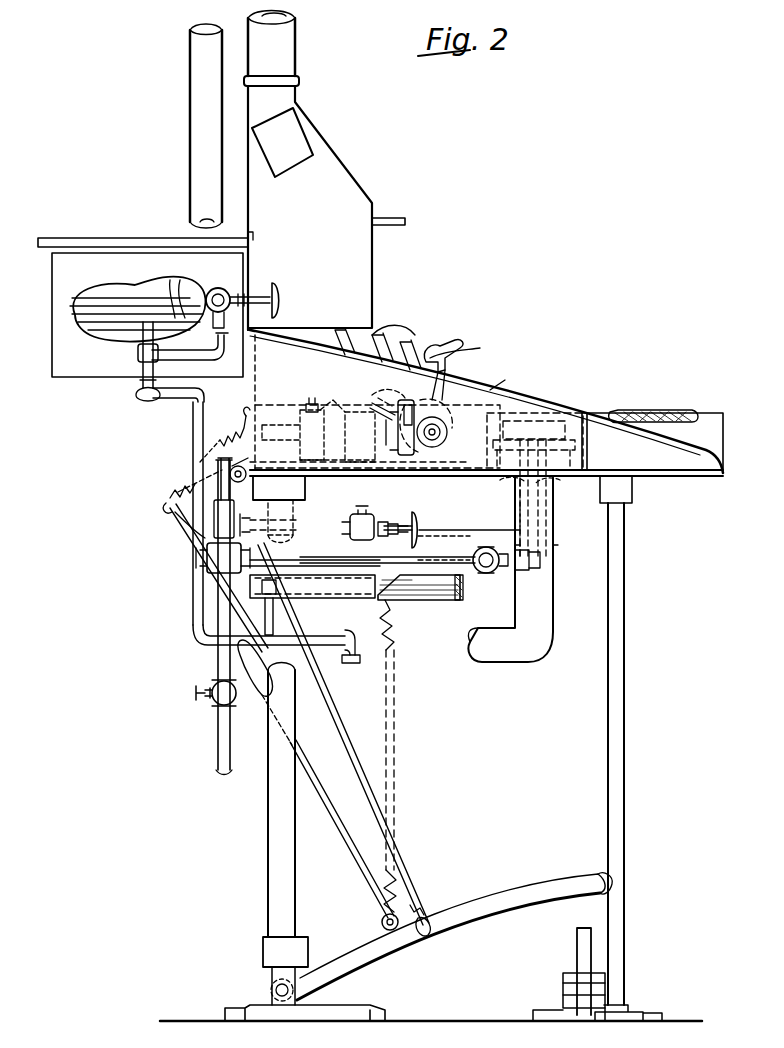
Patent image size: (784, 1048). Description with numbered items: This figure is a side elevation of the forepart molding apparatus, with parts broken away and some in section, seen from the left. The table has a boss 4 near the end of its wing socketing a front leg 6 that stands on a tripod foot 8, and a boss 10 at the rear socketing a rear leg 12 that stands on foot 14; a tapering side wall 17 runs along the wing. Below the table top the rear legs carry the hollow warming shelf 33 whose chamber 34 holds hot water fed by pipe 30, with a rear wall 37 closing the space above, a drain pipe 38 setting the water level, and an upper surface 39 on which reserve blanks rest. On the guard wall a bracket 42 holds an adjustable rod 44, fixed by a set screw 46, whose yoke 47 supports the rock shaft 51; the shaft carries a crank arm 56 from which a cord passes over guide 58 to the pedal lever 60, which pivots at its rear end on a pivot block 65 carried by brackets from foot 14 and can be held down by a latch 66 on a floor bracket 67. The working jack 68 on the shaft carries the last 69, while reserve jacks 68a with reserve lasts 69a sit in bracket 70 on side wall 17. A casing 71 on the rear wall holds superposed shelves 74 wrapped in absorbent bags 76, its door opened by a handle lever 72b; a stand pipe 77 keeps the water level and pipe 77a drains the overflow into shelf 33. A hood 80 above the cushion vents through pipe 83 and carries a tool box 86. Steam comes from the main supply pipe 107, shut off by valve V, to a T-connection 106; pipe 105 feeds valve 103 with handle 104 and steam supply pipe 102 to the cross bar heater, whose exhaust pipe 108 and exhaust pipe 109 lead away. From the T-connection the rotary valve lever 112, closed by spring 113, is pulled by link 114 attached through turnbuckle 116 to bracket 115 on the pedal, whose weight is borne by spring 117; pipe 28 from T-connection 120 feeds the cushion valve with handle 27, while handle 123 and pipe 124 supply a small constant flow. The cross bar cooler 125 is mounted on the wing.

The boss 4 is at (633, 490).
The front leg 6 is at (626, 618).
The foot 8 is at (644, 1011).
The boss 10 is at (270, 470).
The rear leg 12 is at (265, 884).
The foot 14 is at (330, 1010).
The side wall 17 is at (455, 390).
The operating handle 27 is at (418, 526).
The pipe 28 is at (250, 528).
The pipe 30 is at (463, 518).
The warming shelf 33 is at (416, 608).
The chamber 34 is at (452, 608).
The rear wall 37 is at (233, 472).
The drain pipe 38 is at (274, 628).
The upper surface 39 is at (412, 566).
The supporting bracket 42 is at (337, 421).
The rod 44 is at (285, 428).
The set screw 46 is at (306, 406).
The yoke 47 is at (375, 405).
The rock shaft 51 is at (504, 378).
The crank arm 56 is at (452, 358).
The guide 58 is at (556, 487).
The pedal lever 60 is at (480, 922).
The pivot block 65 is at (300, 945).
The latch 66 is at (578, 940).
The bracket 67 is at (548, 1008).
The jack 68 is at (446, 442).
The reserve jack 68a is at (393, 332).
The working last 69 is at (386, 413).
The reserve last 69a is at (440, 345).
The bracket 70 is at (368, 352).
The casing 71 is at (60, 352).
The handle lever 72b is at (393, 217).
The shelf 74 is at (182, 288).
The bag 76 is at (172, 355).
The stand pipe 77 is at (140, 346).
The pipe 77a is at (200, 604).
The hood 80 is at (338, 168).
The pipe 83 is at (286, 53).
The tool box 86 is at (290, 142).
The steam supply pipe 102 is at (556, 536).
The valve 103 is at (486, 568).
The controlling handle 104 is at (522, 568).
The pipe 105 is at (305, 565).
The T-connection 106 is at (222, 564).
The main steam supply pipe 107 is at (216, 655).
The exhaust pipe 108 is at (443, 548).
The exhaust pipe 109 is at (203, 64).
The actuating lever 112 is at (180, 538).
The spring 113 is at (205, 478).
The link 114 is at (178, 514).
The bracket 115 is at (382, 920).
The turnbuckle 116 is at (268, 690).
The spring 117 is at (381, 805).
The T-connection 120 is at (178, 492).
The controlling handle 123 is at (282, 301).
The pipe 124 is at (218, 465).
The cross bar cooler 125 is at (694, 398).
The controlling valve V is at (222, 700).